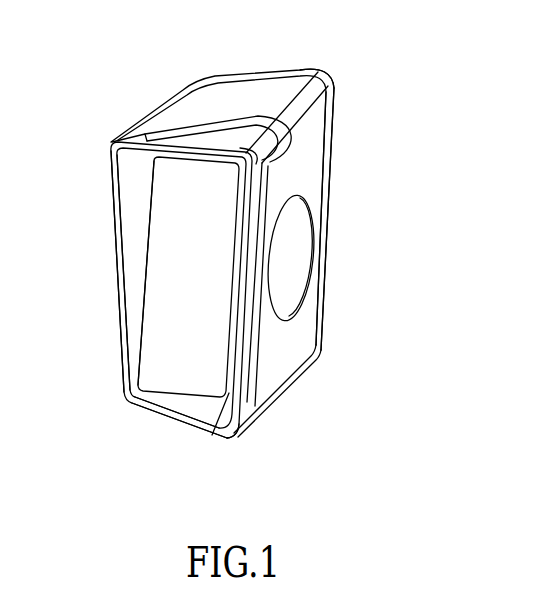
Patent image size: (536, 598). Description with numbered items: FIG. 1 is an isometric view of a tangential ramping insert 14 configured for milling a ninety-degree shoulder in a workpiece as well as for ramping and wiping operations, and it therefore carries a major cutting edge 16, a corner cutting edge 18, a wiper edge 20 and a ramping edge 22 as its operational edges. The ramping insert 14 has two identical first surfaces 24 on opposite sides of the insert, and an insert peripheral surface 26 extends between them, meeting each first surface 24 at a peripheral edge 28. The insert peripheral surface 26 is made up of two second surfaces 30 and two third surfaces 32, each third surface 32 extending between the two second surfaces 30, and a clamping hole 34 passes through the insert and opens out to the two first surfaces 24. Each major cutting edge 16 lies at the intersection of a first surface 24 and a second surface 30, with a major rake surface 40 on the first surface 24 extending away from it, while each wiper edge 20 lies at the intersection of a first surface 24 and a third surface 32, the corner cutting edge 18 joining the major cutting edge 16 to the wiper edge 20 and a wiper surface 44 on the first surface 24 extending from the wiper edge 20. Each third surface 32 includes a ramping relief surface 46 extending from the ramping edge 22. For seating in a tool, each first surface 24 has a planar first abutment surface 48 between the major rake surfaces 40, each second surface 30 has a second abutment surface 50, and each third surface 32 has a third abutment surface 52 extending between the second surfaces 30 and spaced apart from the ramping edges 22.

The ramping insert 14 is at (190, 65).
The major cutting edge 16 is at (113, 252).
The corner cutting edge 18 is at (236, 443).
The wiper edge 20 is at (230, 440).
The ramping edge 22 is at (164, 416).
The first surface 24 is at (227, 213).
The insert peripheral surface 26 is at (307, 100).
The peripheral edge 28 is at (251, 296).
The second surface 30 is at (296, 402).
The third surface 32 is at (261, 98).
The clamping hole 34 is at (286, 230).
The major rake surface 40 is at (264, 395).
The wiper surface 44 is at (217, 430).
The ramping relief surface 46 is at (211, 142).
The first abutment surface 48 is at (221, 253).
The second abutment surface 50 is at (313, 133).
The third abutment surface 52 is at (218, 103).